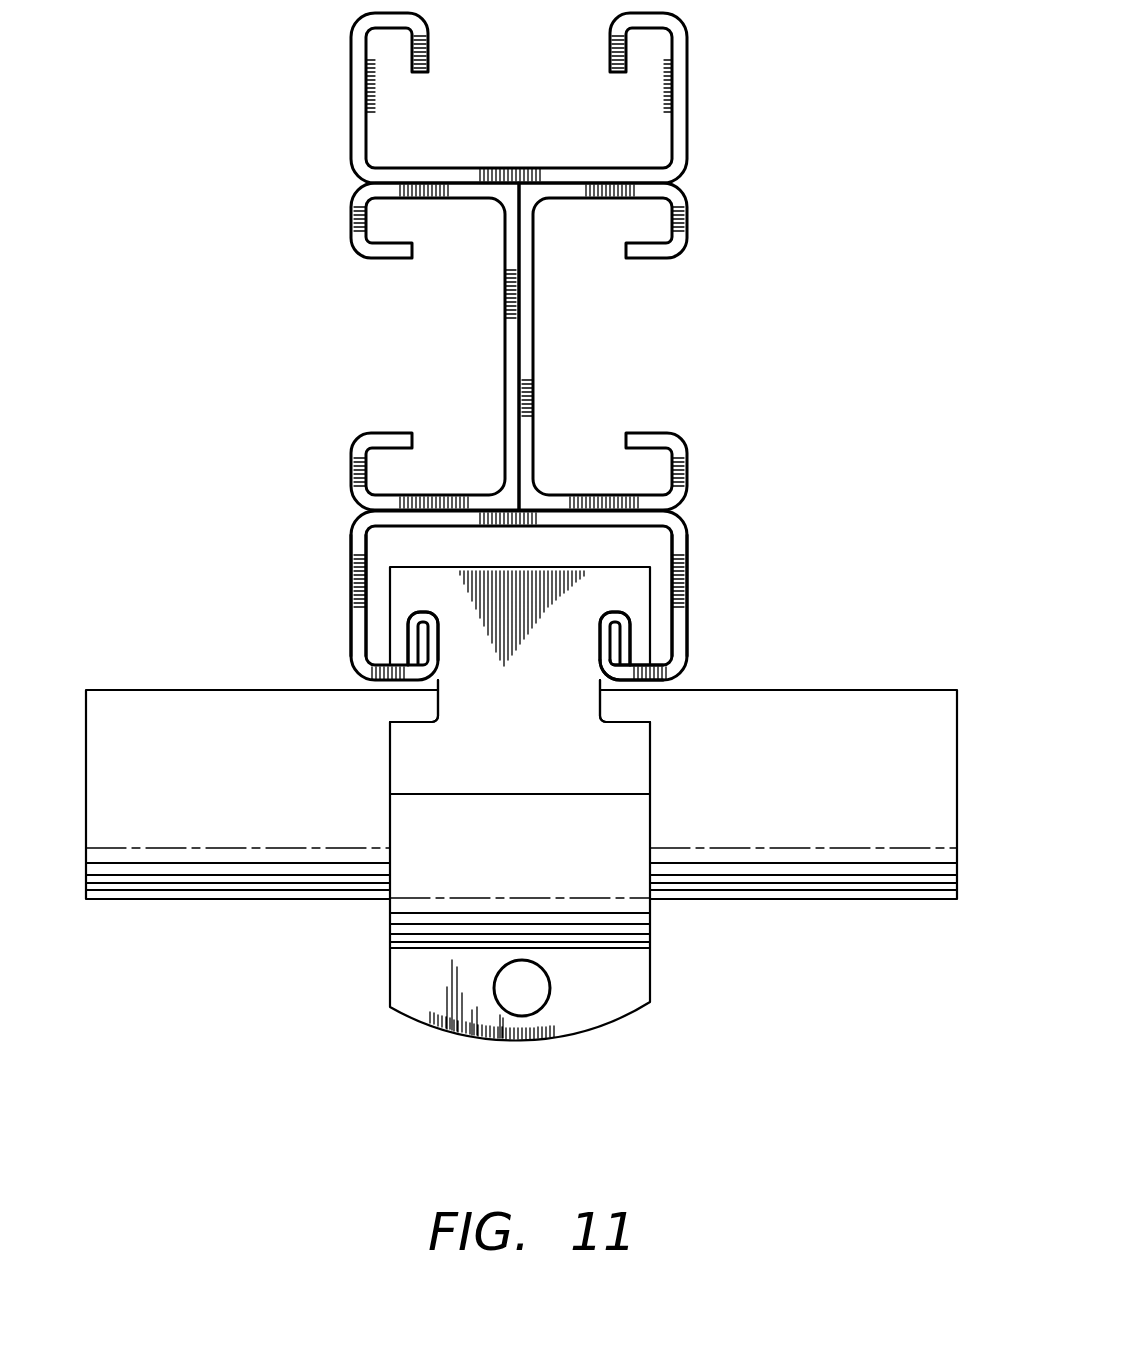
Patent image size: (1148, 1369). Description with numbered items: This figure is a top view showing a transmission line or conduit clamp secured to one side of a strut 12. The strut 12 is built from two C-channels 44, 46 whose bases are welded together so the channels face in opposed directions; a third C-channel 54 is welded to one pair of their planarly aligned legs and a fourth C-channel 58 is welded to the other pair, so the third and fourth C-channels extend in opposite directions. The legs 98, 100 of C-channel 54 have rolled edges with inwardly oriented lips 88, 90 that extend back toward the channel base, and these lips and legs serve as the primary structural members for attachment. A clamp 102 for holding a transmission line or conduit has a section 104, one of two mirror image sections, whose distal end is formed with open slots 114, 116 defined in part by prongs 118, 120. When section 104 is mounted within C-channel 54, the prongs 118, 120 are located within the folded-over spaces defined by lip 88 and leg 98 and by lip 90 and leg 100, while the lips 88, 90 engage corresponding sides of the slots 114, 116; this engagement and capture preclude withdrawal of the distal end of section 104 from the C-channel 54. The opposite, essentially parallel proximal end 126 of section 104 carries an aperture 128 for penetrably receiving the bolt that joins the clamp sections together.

The strut 12 is at (727, 333).
The C-channel 44 is at (536, 336).
The C-channel 46 is at (504, 358).
The third C-channel 54 is at (698, 564).
The fourth C-channel 58 is at (488, 166).
The lip 88 is at (422, 616).
The lip 90 is at (617, 614).
The leg 98 is at (350, 558).
The leg 100 is at (690, 584).
The clamp 102 is at (591, 1072).
The section 104 is at (632, 990).
The open slot 114 is at (436, 670).
The open slot 116 is at (598, 685).
The prong 118 is at (398, 648).
The prong 120 is at (645, 655).
The proximal end 126 is at (420, 986).
The aperture 128 is at (500, 1003).